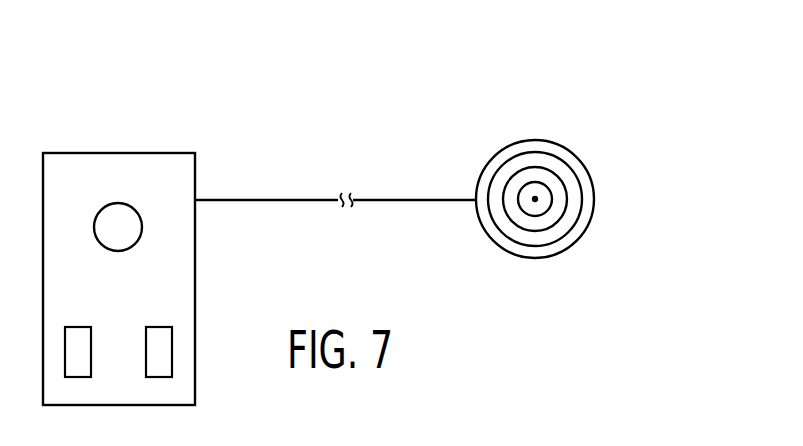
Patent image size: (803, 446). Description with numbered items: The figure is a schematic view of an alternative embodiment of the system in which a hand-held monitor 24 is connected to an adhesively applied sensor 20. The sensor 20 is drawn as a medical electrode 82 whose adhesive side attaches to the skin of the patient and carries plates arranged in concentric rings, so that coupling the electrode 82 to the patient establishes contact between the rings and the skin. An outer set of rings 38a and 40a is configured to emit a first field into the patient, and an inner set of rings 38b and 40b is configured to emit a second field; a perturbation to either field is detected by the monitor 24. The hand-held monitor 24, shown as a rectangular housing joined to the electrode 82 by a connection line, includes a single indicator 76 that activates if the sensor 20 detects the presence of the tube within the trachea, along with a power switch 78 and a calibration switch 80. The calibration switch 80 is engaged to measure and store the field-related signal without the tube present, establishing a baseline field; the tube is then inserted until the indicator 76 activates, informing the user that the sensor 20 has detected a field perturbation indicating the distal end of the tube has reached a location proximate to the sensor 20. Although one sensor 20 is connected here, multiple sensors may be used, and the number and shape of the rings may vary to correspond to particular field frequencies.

The sensor 20 is at (581, 88).
The hand-held monitor 24 is at (117, 152).
The indicator 76 is at (142, 226).
The power switch 78 is at (73, 326).
The calibration switch 80 is at (156, 326).
The outer ring 38a is at (580, 199).
The inner ring 38b is at (548, 186).
The outer ring 40a is at (555, 220).
The inner ring 40b is at (535, 199).
The medical electrode 82 is at (535, 259).